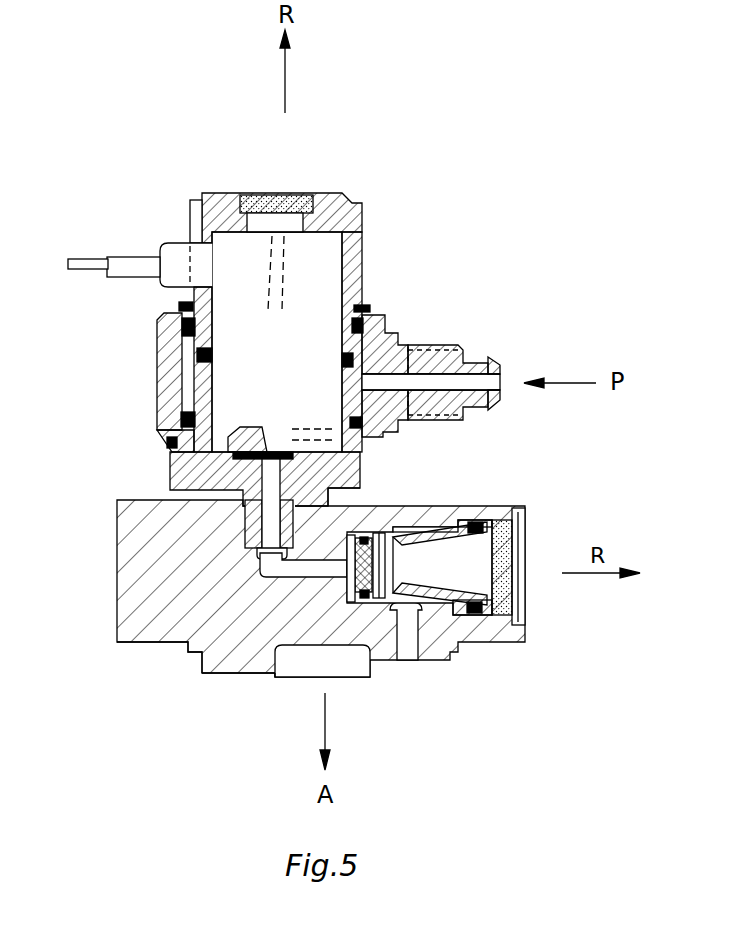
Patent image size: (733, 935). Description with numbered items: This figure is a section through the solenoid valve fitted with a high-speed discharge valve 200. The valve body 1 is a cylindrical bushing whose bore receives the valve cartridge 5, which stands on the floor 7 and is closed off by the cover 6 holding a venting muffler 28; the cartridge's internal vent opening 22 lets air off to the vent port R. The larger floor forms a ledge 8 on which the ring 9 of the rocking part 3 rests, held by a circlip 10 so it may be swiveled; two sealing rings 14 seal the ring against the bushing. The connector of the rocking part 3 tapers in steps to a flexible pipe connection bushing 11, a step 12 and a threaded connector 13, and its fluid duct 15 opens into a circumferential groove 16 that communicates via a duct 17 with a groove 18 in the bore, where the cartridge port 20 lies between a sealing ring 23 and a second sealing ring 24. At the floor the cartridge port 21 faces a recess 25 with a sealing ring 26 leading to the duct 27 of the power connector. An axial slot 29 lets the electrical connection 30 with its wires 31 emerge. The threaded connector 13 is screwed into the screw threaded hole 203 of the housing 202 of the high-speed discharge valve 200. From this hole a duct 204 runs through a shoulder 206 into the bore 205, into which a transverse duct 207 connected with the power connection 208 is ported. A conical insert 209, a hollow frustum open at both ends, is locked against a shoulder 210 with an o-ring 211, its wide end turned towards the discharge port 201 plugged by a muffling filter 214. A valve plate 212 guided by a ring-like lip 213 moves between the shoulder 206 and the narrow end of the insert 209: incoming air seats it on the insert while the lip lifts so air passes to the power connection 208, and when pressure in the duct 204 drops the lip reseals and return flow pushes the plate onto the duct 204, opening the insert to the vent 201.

The valve body 1 is at (378, 228).
The rocking part 3 is at (470, 350).
The valve cartridge 5 is at (257, 329).
The cover 6 is at (220, 210).
The floor 7 is at (236, 536).
The ledge 8 is at (177, 458).
The ring 9 is at (165, 331).
The circlip 10 is at (183, 305).
The flexible pipe connection bushing 11 is at (498, 362).
The step 12 is at (476, 418).
The threaded connector 13 is at (467, 350).
The sealing rings 14 is at (366, 305).
The fluid duct 15 is at (420, 385).
The circumferential groove 16 is at (375, 315).
The duct 17 is at (440, 363).
The groove 18 is at (165, 410).
The port 20 is at (312, 433).
The port 21 is at (178, 468).
The port 22 is at (280, 300).
The sealing ring 23 is at (230, 455).
The second sealing ring 24 is at (372, 320).
The recess 25 is at (373, 458).
The sealing ring 26 is at (373, 487).
The duct 27 is at (282, 575).
The venting muffler 28 is at (275, 205).
The axial slot 29 is at (192, 220).
The electrical connection 30 is at (173, 260).
The wires 31 is at (78, 258).
The high-speed discharge valve 200 is at (546, 525).
The discharge port 201 is at (522, 577).
The housing 202 is at (208, 695).
The screw threaded hole 203 is at (118, 607).
The duct 204 is at (198, 668).
The hole 205 is at (428, 516).
The shoulder 206 is at (313, 645).
The transverse duct 207 is at (438, 620).
The power connection 208 is at (293, 668).
The conical insert 209 is at (470, 612).
The shoulder 210 is at (445, 618).
The o-ring 211 is at (493, 535).
The valve plate 212 is at (360, 600).
The ring-like lip 213 is at (410, 630).
The muffling filter 214 is at (507, 590).